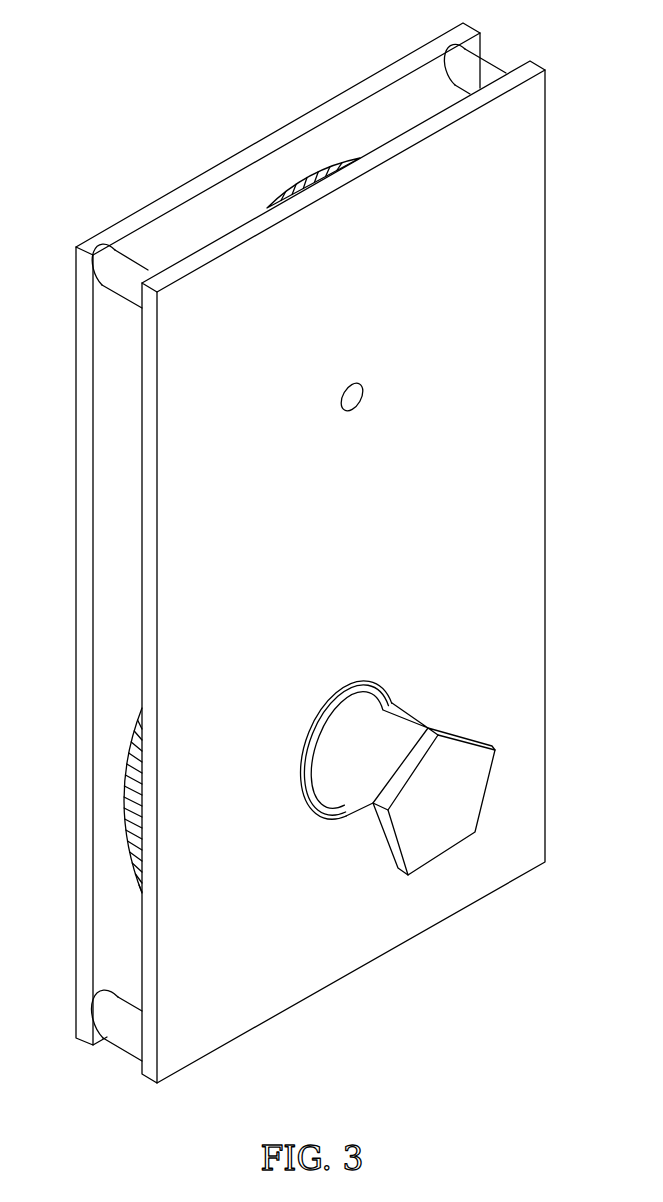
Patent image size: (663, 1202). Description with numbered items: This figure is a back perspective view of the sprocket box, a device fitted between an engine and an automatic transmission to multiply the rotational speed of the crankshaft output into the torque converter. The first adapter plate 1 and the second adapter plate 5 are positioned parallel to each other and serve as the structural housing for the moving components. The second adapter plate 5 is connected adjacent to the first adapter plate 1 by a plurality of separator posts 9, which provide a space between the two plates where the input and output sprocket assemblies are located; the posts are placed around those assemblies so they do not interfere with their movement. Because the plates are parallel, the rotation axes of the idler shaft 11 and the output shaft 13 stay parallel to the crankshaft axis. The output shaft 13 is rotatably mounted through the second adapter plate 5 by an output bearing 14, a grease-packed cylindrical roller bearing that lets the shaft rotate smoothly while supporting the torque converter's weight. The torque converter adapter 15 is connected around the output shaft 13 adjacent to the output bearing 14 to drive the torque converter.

The first adapter plate 1 is at (84, 685).
The second adapter plate 5 is at (522, 472).
The separator posts 9 is at (482, 66).
The idler shaft 11 is at (358, 381).
The output shaft 13 is at (370, 818).
The output bearing 14 is at (320, 703).
The torque converter adapter 15 is at (470, 826).